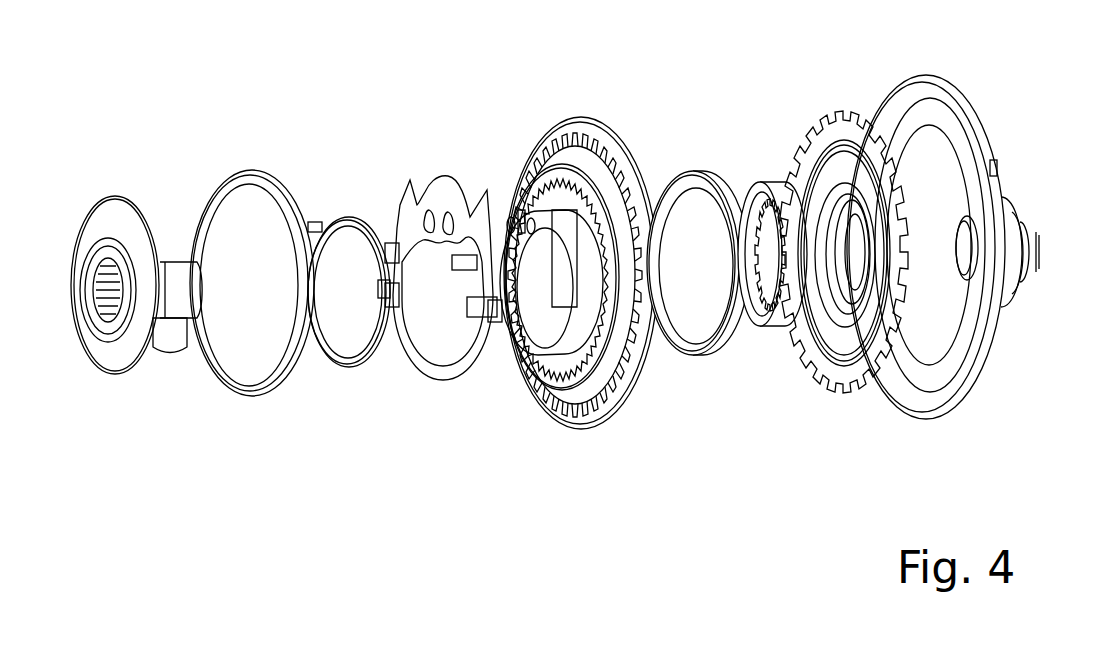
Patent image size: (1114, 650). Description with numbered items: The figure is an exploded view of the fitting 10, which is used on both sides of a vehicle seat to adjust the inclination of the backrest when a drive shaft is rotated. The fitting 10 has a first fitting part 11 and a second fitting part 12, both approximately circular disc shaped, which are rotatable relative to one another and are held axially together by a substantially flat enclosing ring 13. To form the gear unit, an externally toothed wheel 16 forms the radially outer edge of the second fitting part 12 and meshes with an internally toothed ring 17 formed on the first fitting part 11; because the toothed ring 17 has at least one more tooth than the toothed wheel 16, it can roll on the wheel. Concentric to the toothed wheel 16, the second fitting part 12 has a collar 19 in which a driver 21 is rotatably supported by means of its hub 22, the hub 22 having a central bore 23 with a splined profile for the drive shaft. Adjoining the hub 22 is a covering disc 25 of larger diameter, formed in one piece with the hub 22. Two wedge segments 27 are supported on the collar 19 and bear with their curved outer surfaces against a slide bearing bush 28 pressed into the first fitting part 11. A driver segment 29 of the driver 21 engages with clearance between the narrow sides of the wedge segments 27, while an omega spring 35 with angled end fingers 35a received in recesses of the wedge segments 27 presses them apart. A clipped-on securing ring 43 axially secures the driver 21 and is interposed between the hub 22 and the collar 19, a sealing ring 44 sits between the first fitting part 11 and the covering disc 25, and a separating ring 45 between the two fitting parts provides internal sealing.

The fitting 10 is at (358, 87).
The first fitting part 11 is at (580, 435).
The second fitting part 12 is at (849, 398).
The enclosing ring 13 is at (907, 420).
The externally toothed wheel 16 is at (794, 131).
The internally toothed ring 17 is at (555, 118).
The collar 19 is at (847, 279).
The driver 21 is at (117, 377).
The hub 22 is at (185, 262).
The bore 23 is at (93, 293).
The covering disc 25 is at (115, 202).
The wedge segments 27 is at (497, 323).
The slide bearing bush 28 is at (768, 327).
The driver segment 29 is at (163, 355).
The omega spring 35 is at (353, 360).
The angled end finger 35a is at (387, 233).
The securing ring 43 is at (1013, 309).
The sealing ring 44 is at (257, 393).
The separating ring 45 is at (692, 357).